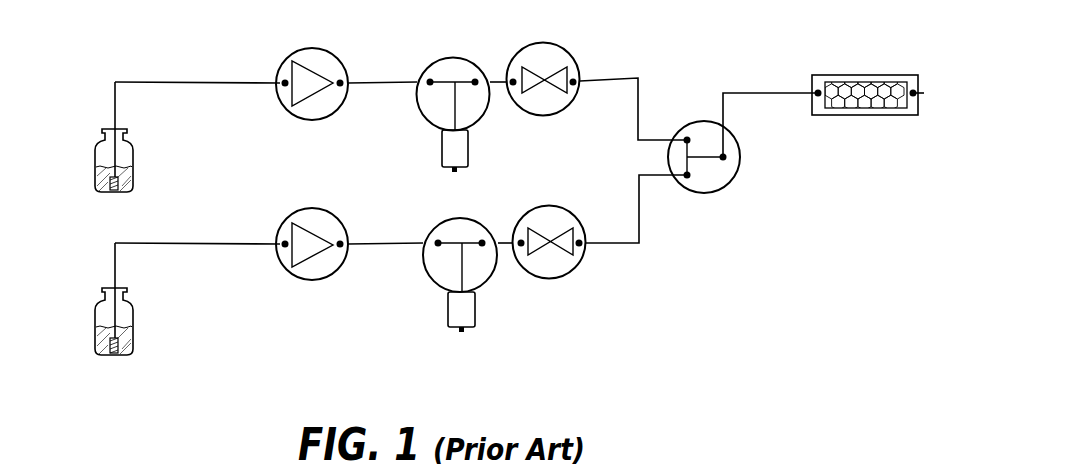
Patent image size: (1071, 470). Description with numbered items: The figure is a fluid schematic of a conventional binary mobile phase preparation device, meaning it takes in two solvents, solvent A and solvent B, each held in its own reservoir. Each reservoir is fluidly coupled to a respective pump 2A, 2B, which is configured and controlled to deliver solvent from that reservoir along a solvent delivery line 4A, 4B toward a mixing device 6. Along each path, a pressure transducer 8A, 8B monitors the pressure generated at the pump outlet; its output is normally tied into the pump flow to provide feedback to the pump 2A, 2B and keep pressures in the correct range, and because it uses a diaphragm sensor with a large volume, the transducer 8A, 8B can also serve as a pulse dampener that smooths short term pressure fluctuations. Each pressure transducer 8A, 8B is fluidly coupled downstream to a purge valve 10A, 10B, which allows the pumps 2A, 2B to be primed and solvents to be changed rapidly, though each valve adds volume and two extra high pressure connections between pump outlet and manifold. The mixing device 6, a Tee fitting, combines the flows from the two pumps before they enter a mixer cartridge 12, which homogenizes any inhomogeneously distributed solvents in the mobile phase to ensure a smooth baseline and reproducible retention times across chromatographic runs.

The solvent A is at (101, 137).
The solvent B is at (101, 299).
The pump 2A is at (312, 71).
The pump 2B is at (312, 259).
The solvent delivery line 4A is at (197, 70).
The solvent delivery line 4B is at (197, 234).
The mixing device 6 is at (704, 145).
The pressure transducer 8A is at (453, 101).
The pressure transducer 8B is at (460, 289).
The purge valve 10A is at (543, 64).
The purge valve 10B is at (549, 258).
The mixer cartridge 12 is at (865, 81).